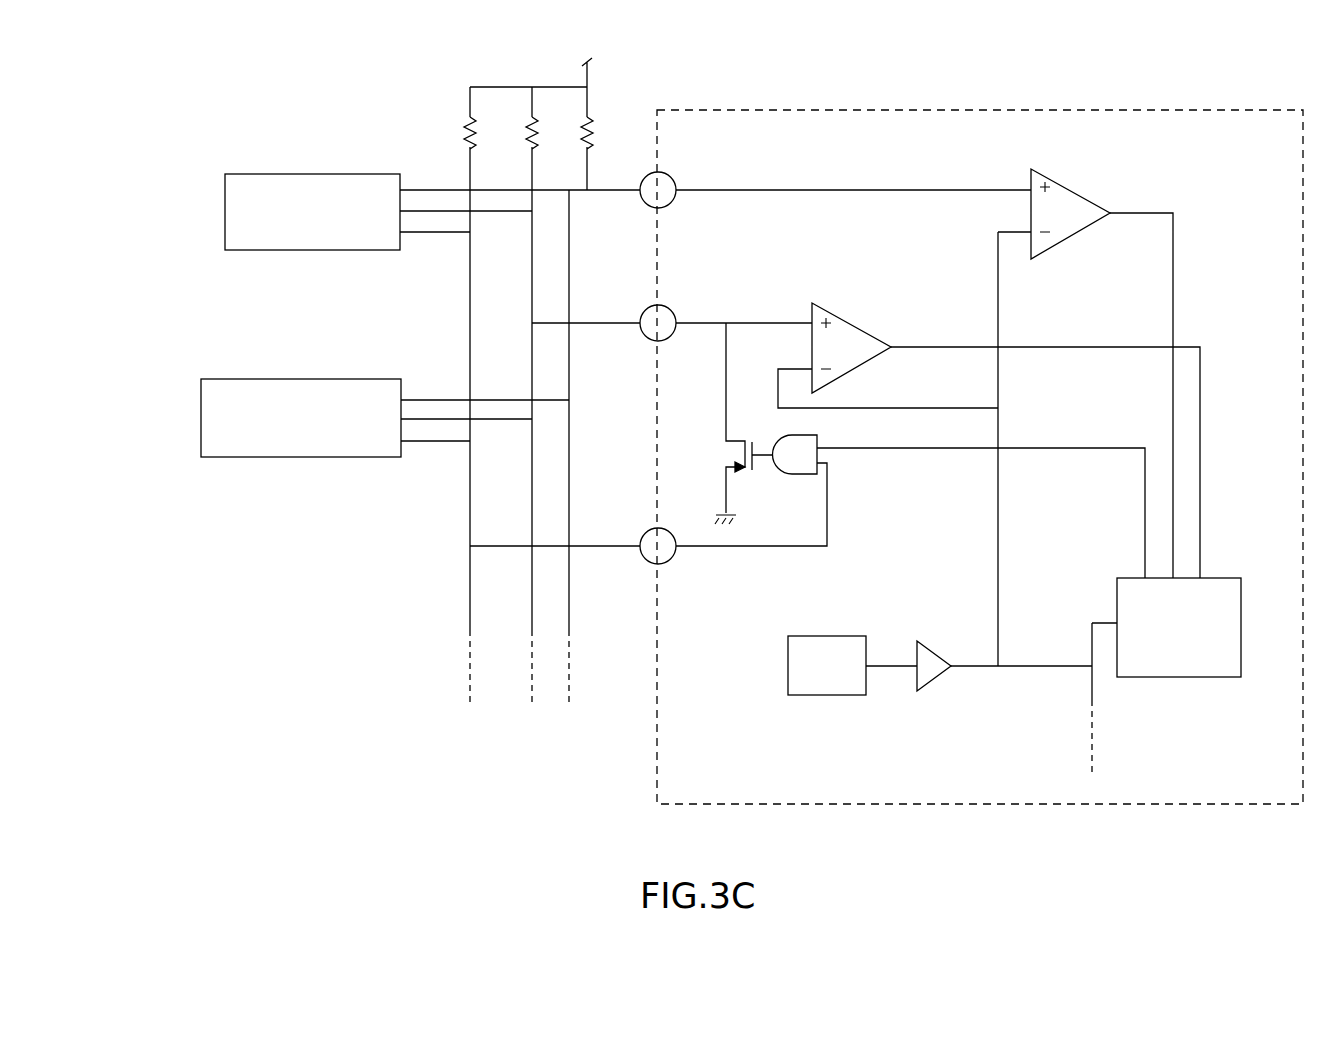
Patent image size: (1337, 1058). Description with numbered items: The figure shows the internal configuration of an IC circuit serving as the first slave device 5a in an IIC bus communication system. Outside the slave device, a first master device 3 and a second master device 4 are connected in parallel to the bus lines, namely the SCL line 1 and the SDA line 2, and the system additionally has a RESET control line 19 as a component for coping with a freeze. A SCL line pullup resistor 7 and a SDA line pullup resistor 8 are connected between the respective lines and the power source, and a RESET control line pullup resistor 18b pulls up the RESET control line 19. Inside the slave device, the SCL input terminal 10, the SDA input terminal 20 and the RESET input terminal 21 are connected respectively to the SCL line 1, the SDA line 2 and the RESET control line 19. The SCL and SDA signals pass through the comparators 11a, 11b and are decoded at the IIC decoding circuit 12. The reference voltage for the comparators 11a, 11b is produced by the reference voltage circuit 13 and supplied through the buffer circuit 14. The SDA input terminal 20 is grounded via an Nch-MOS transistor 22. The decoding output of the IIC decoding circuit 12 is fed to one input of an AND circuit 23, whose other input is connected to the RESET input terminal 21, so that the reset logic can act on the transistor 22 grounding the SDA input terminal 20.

The SCL line 1 is at (571, 480).
The SDA line 2 is at (531, 466).
The RESET control line 19 is at (469, 496).
The first master device 3 is at (225, 196).
The second master device 4 is at (201, 401).
The first slave device 5a is at (1005, 806).
The SCL line pullup resistor 7 is at (590, 68).
The SDA line pullup resistor 8 is at (528, 126).
The RESET control line pullup resistor 18b is at (466, 126).
The SCL input terminal 10 is at (640, 200).
The SDA input terminal 20 is at (641, 334).
The RESET input terminal 21 is at (641, 556).
The comparator 11a is at (1075, 236).
The comparator 11b is at (852, 372).
The IIC decoding circuit 12 is at (1190, 678).
The reference voltage circuit 13 is at (812, 696).
The buffer circuit 14 is at (955, 676).
The Nch-MOS transistor 22 is at (722, 452).
The AND circuit 23 is at (828, 470).